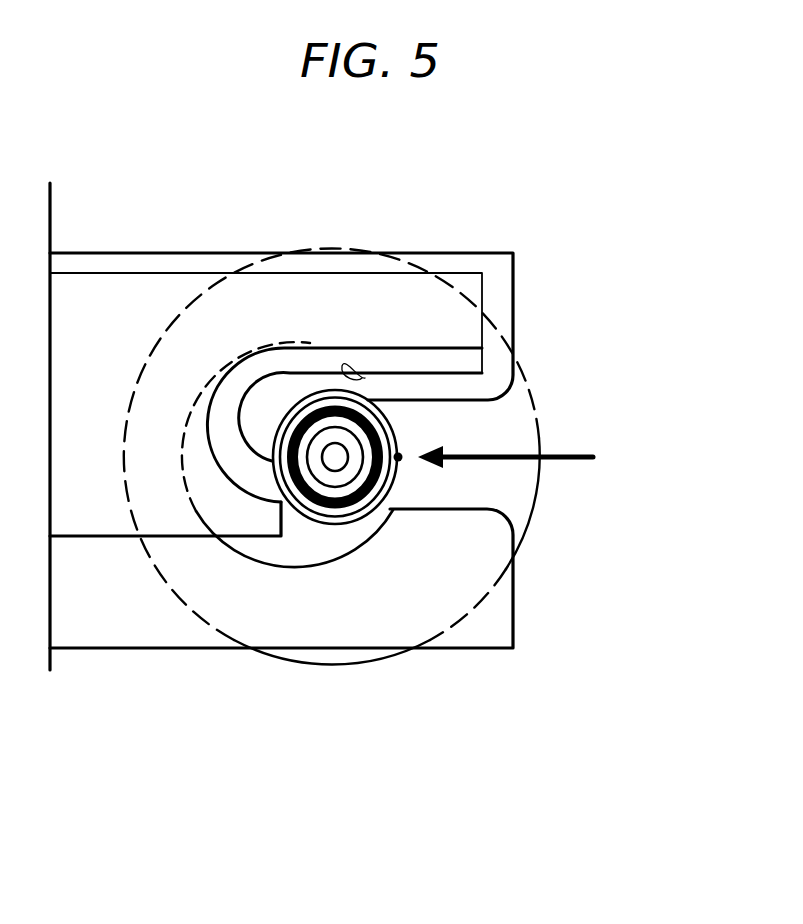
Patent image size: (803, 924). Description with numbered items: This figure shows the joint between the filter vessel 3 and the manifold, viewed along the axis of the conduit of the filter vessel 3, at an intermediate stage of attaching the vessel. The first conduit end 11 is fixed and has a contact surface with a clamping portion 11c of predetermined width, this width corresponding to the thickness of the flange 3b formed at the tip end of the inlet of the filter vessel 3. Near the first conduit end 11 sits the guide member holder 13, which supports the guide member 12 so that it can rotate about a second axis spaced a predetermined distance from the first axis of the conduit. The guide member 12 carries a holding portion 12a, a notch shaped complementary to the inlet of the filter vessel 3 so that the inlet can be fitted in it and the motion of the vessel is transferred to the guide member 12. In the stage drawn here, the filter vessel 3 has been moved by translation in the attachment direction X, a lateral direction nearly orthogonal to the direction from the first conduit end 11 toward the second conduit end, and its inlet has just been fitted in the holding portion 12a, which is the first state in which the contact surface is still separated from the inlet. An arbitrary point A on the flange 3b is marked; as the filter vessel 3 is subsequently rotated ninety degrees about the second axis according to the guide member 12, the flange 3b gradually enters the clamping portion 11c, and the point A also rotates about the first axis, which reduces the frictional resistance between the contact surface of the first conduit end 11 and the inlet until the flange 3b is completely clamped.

The filter vessel 3 is at (386, 444).
The flange 3b is at (400, 440).
The first conduit end 11 is at (82, 527).
The clamping portion 11c is at (365, 378).
The guide member 12 is at (402, 478).
The holding portion 12a is at (376, 398).
The guide member holder 13 is at (480, 640).
The point A is at (400, 459).
The attachment direction X is at (567, 458).